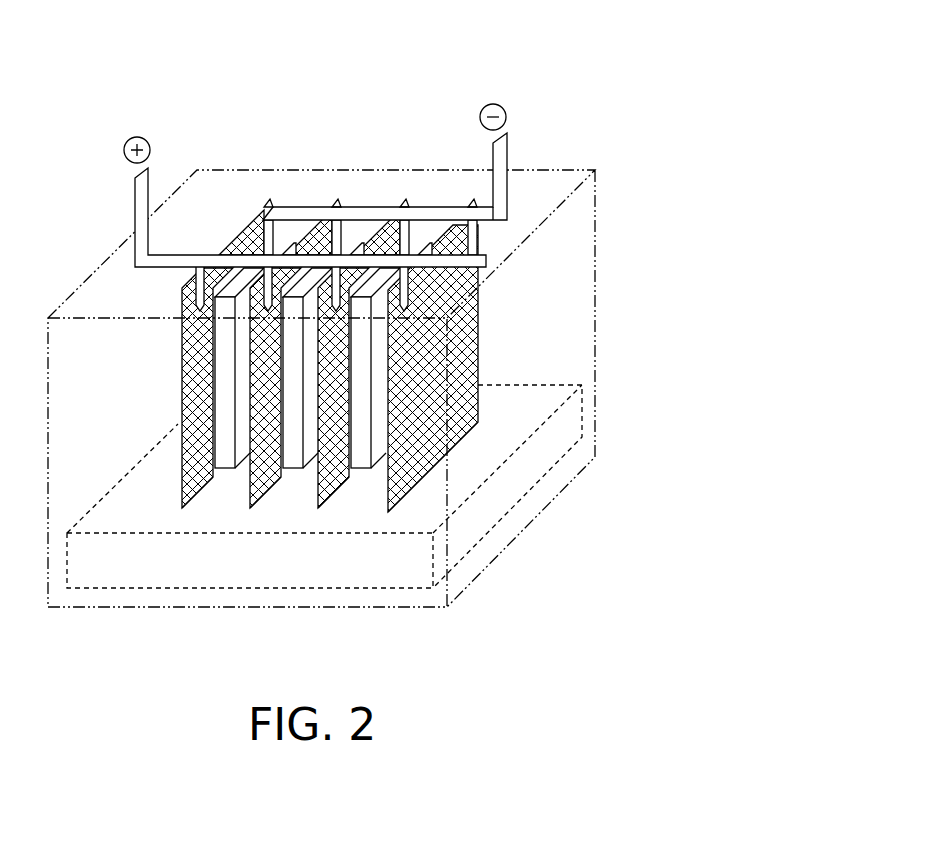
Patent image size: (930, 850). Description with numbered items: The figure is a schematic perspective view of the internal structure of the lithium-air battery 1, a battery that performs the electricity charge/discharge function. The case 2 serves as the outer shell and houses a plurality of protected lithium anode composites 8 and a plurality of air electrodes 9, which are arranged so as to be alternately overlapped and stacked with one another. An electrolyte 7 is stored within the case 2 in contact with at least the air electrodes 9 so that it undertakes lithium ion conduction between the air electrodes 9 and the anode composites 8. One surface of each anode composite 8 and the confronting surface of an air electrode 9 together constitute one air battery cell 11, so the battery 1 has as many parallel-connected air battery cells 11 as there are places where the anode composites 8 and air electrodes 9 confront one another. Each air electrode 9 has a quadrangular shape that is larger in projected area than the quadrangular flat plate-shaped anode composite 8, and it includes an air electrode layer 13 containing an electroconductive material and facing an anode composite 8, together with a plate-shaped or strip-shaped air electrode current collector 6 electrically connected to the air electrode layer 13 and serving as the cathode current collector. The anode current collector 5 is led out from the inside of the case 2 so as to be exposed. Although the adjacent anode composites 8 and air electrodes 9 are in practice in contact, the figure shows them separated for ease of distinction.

The lithium-air battery 1 is at (590, 88).
The case 2 is at (597, 262).
The anode current collector 5 is at (507, 156).
The air electrode current collector 6 is at (135, 198).
The electrolyte 7 is at (67, 569).
The lithium anode composite 8 is at (230, 479).
The air electrode 9 is at (199, 505).
The air battery cell 11 is at (311, 378).
The air electrode layer 13 is at (378, 228).